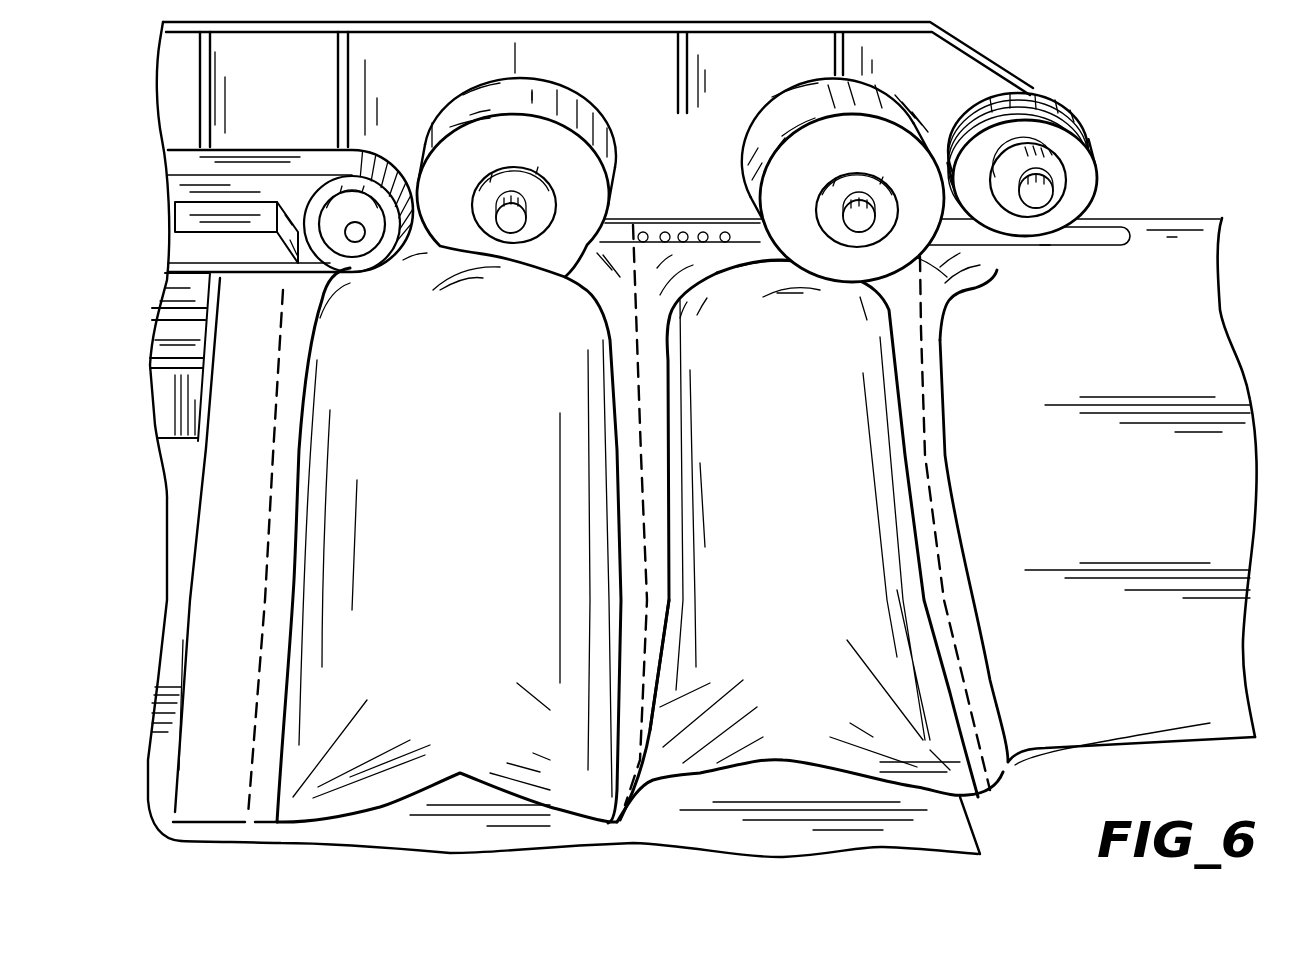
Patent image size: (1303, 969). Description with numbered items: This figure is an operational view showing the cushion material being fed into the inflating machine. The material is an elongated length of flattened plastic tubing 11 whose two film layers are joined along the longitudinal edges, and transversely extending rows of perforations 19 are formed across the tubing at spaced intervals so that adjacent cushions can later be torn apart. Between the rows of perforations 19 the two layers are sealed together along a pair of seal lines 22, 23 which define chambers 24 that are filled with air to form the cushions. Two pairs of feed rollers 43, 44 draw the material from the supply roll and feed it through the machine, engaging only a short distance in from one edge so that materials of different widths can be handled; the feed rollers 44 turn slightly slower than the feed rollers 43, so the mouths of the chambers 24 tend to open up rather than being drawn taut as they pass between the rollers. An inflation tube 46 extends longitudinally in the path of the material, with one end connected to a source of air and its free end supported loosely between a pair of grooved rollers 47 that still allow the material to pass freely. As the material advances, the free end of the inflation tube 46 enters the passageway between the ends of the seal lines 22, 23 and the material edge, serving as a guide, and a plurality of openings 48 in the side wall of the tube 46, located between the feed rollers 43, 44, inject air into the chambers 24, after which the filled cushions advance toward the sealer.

The flattened plastic tubing 11 is at (1128, 663).
The rows of perforations 19 is at (937, 520).
The seal line 22 is at (670, 500).
The seal line 23 is at (617, 482).
The chambers 24 is at (468, 654).
The feed rollers 43 is at (840, 255).
The feed rollers 44 is at (543, 247).
The inflation tube 46 is at (1078, 240).
The grooved rollers 47 is at (1078, 165).
The openings 48 is at (703, 232).